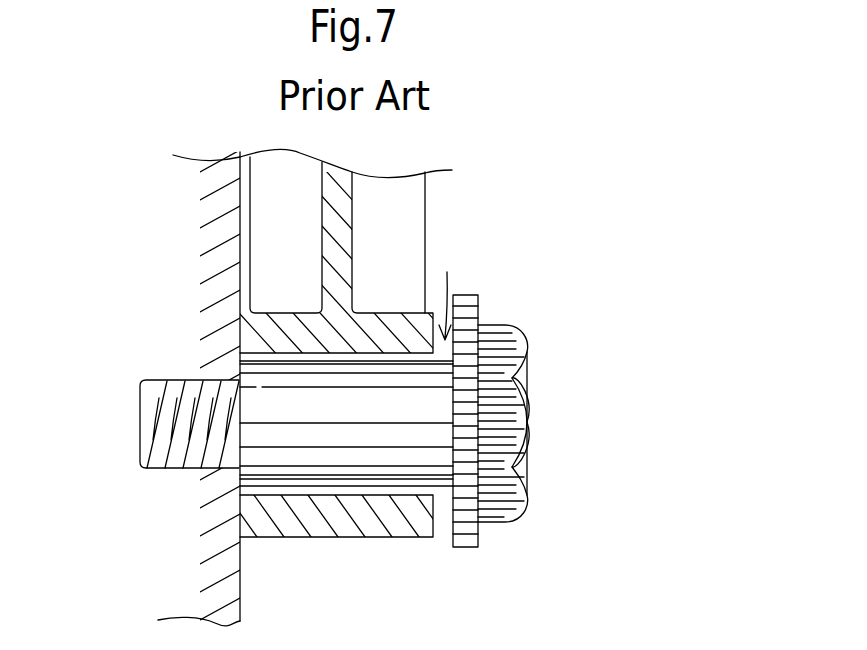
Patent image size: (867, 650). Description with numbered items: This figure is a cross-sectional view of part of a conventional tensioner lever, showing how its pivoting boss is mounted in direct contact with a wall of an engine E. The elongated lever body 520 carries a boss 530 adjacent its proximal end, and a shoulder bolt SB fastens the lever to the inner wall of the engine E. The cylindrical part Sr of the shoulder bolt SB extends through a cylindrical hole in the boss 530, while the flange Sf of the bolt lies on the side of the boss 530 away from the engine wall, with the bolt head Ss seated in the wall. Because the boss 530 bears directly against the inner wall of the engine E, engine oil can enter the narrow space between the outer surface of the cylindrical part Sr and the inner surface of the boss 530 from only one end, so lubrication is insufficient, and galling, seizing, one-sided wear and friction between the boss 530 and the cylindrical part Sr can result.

The lever body 520 is at (413, 224).
The boss 530 is at (363, 527).
The screw head Ss is at (152, 436).
The cylindrical part Sr is at (440, 410).
The flange Sf is at (468, 323).
The shoulder bolt SB is at (553, 487).
The engine E is at (188, 550).